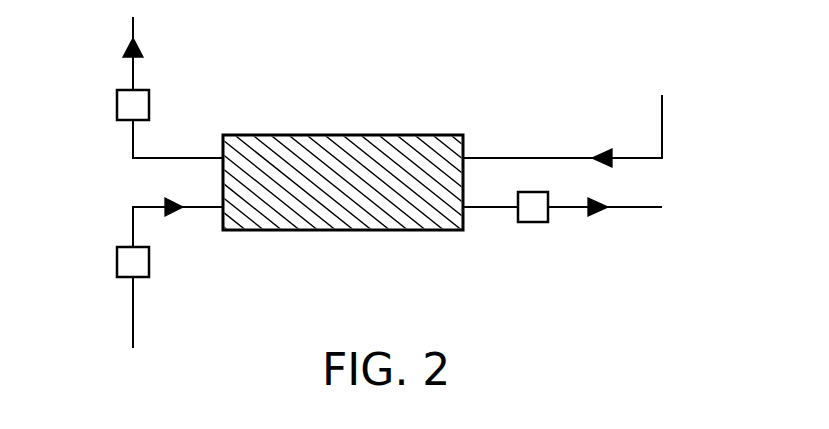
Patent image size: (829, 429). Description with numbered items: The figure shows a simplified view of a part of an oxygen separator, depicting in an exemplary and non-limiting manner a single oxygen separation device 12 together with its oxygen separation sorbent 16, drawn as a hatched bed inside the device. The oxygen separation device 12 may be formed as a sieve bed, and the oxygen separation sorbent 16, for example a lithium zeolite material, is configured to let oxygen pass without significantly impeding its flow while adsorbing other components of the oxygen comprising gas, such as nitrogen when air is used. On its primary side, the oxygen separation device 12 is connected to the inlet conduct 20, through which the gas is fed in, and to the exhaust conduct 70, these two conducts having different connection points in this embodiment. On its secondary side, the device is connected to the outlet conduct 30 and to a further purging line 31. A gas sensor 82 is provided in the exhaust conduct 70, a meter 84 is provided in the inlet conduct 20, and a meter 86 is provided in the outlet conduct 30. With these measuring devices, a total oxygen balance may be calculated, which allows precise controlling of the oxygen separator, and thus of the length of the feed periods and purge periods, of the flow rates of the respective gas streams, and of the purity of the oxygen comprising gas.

The oxygen separation device 12 is at (280, 136).
The oxygen separation sorbent 16 is at (385, 177).
The inlet conduct 20 is at (132, 330).
The outlet conduct 30 is at (483, 208).
The purging line 31 is at (663, 115).
The exhaust conduct 70 is at (132, 150).
The gas sensor 82 is at (117, 105).
The meter 84 is at (117, 262).
The meter 86 is at (533, 222).